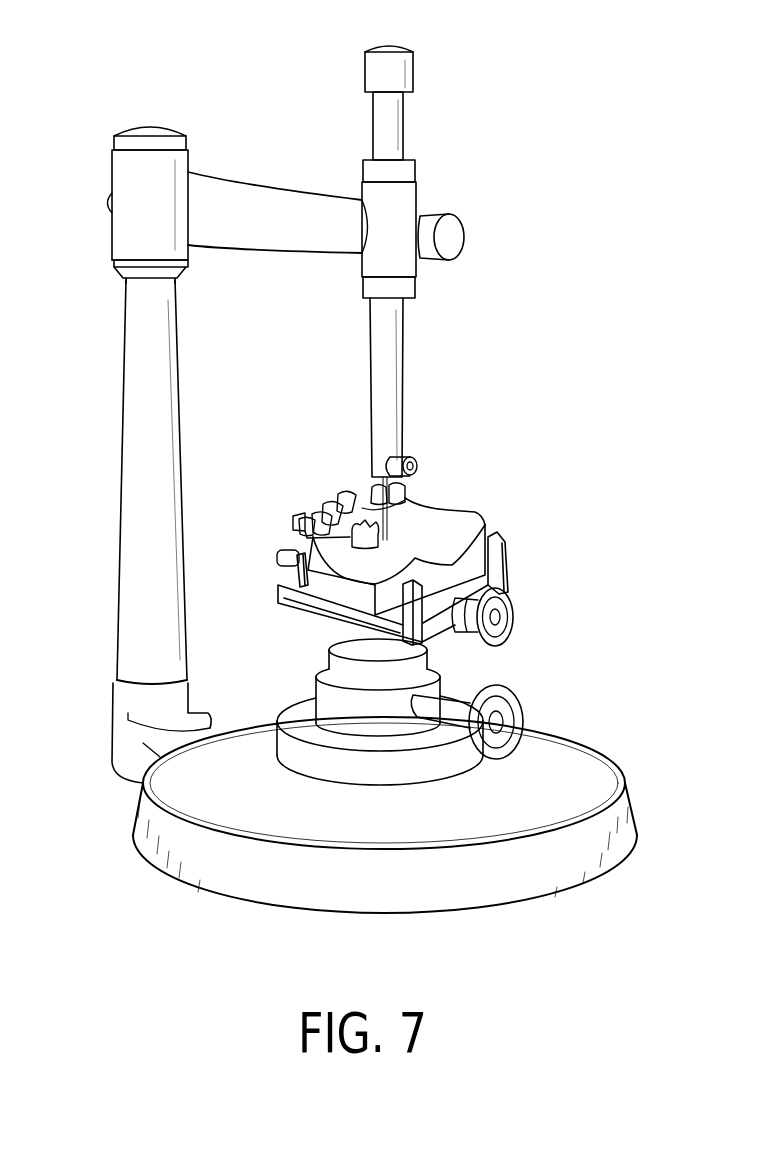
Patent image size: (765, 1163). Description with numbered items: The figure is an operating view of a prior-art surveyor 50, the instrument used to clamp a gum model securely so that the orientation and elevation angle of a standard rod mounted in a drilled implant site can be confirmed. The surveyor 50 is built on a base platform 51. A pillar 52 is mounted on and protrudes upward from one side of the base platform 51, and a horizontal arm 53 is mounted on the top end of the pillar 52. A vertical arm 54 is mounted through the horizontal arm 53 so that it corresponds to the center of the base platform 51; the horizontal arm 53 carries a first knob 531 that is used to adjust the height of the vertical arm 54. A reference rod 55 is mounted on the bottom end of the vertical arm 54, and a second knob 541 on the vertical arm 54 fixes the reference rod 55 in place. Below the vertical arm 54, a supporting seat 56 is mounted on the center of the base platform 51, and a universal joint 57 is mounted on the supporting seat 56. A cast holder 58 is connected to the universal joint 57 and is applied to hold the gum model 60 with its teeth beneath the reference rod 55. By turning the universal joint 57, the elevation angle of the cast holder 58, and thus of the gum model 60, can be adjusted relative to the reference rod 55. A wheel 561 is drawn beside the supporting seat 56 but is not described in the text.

The surveyor 50 is at (574, 290).
The base platform 51 is at (287, 833).
The pillar 52 is at (127, 360).
The horizontal arm 53 is at (218, 195).
The first knob 531 is at (440, 212).
The vertical arm 54 is at (390, 367).
The second knob 541 is at (412, 458).
The reference rod 55 is at (415, 508).
The supporting seat 56 is at (300, 757).
The adjustment wheel 561 is at (523, 712).
The universal joint 57 is at (330, 642).
The cast holder 58 is at (502, 565).
The gum model 60 is at (483, 527).